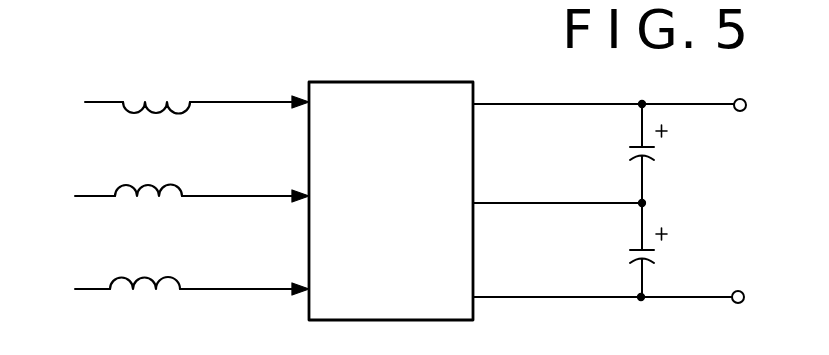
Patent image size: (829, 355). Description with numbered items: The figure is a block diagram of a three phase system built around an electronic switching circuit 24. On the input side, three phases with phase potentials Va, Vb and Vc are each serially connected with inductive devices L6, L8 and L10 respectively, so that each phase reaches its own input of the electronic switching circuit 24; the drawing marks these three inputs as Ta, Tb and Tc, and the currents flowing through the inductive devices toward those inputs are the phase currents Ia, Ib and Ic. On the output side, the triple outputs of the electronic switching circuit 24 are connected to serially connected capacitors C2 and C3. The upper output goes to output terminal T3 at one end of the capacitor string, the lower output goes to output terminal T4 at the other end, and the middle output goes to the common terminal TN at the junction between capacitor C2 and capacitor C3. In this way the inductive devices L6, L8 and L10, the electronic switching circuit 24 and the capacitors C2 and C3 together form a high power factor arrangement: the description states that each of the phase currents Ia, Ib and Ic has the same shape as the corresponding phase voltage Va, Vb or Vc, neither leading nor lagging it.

The electronic switching circuit 24 is at (386, 82).
The inductive device L6 is at (171, 98).
The inductive device L8 is at (184, 153).
The inductive device L10 is at (190, 250).
The capacitor C2 is at (656, 154).
The capacitor C3 is at (659, 253).
The output terminal T3 is at (719, 105).
The output terminal T4 is at (718, 297).
The common terminal TN is at (654, 198).
The input terminal phase a Ta is at (330, 106).
The input terminal phase b Tb is at (331, 198).
The input terminal phase c Tc is at (328, 292).
The phase potential Va is at (72, 104).
The phase potential Vb is at (67, 197).
The phase potential Vc is at (67, 289).
The phase current Ia is at (249, 90).
The phase current Ib is at (245, 184).
The phase current Ic is at (244, 278).